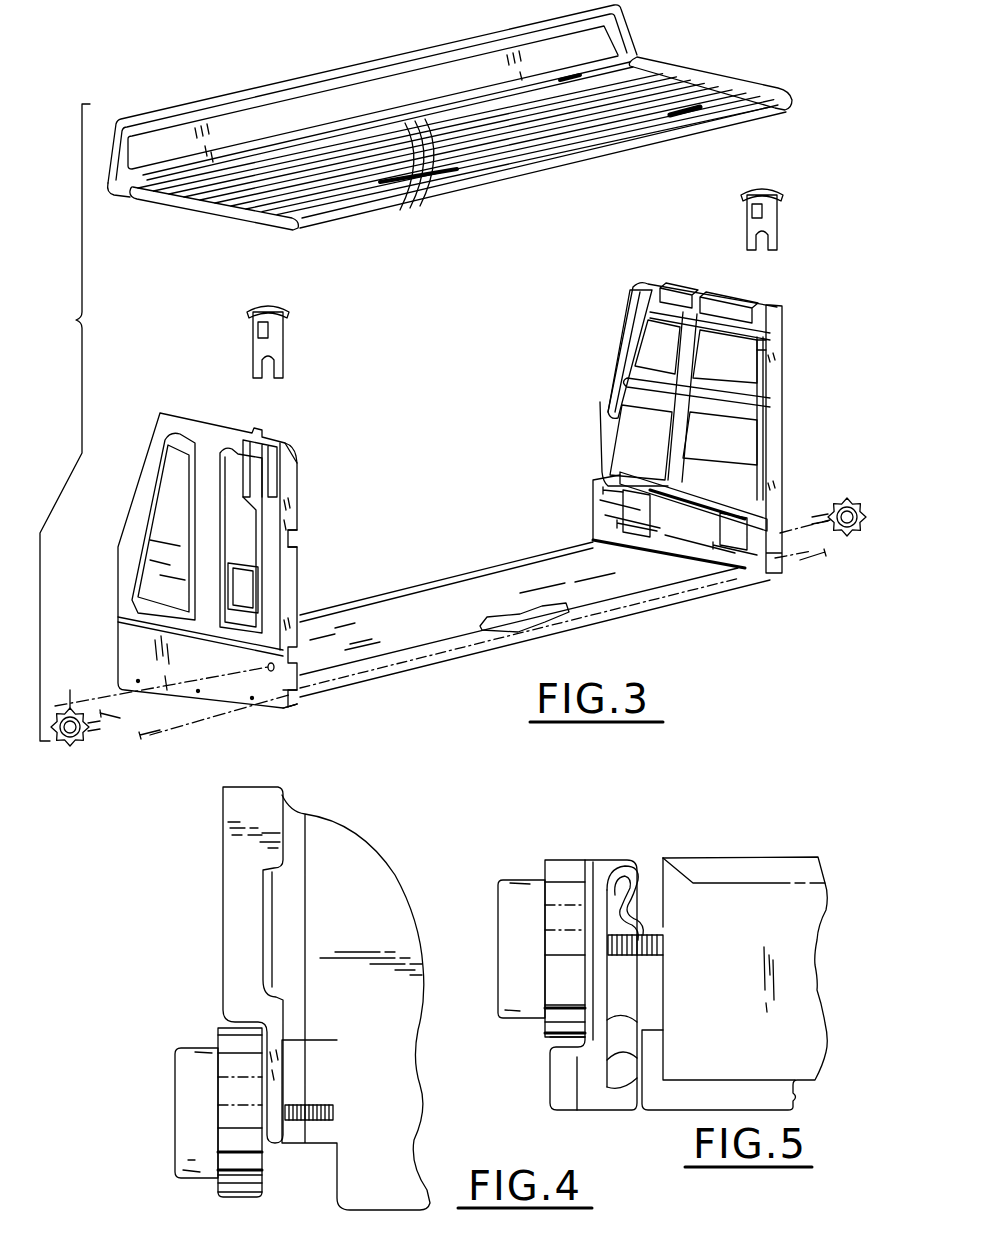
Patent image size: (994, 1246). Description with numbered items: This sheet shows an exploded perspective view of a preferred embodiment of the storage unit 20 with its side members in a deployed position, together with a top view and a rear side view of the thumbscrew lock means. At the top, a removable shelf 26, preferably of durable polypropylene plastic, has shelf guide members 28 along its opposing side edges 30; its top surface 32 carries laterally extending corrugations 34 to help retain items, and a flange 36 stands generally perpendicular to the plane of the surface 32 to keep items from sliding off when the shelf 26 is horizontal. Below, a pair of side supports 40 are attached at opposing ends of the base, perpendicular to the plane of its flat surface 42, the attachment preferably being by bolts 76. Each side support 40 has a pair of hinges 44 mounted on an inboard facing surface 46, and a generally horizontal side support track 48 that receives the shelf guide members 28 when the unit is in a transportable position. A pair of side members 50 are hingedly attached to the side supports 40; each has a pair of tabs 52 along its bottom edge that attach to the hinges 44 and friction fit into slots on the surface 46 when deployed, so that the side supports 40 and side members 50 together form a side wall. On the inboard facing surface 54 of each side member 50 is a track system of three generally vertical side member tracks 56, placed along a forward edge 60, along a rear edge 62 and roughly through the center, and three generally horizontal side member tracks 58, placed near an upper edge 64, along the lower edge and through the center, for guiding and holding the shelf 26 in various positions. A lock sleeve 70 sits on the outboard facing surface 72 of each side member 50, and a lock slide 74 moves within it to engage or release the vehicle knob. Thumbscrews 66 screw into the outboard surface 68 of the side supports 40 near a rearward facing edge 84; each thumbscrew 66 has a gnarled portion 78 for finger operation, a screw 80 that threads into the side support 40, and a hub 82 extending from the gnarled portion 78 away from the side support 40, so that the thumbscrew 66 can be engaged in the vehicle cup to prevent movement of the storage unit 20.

In FIG. 3, the storage unit 20 is at (59, 422).
In FIG. 3, the removable shelf 26 is at (469, 137).
In FIG. 5, the removable shelf 26 is at (717, 951).
In FIG. 3, the shelf guide members 28 is at (272, 228).
In FIG. 5, the shelf guide members 28 is at (625, 888).
In FIG. 3, the opposing side edges 30 is at (112, 196).
In FIG. 3, the top surface 32 is at (568, 152).
In FIG. 3, the corrugations 34 is at (425, 195).
In FIG. 3, the flange 36 is at (440, 62).
In FIG. 3, the side supports 40 is at (455, 478).
In FIG. 4, the side supports 40 is at (233, 874).
In FIG. 3, the flat surface 42 is at (640, 585).
In FIG. 3, the hinges 44 is at (615, 526).
In FIG. 3, the inboard facing surface 46 is at (700, 540).
In FIG. 3, the side support track 48 is at (600, 492).
In FIG. 3, the side members 50 is at (145, 432).
In FIG. 3, the tabs 52 is at (603, 482).
In FIG. 3, the inboard facing surface 54 is at (662, 288).
In FIG. 3, the vertically extending side member tracks 56 is at (226, 427).
In FIG. 3, the horizontally extending side member tracks 58 is at (297, 535).
In FIG. 3, the forward edge 60 is at (628, 300).
In FIG. 5, the forward edge 60 is at (528, 860).
In FIG. 3, the rear edge 62 is at (298, 510).
In FIG. 3, the upper edge 64 is at (735, 303).
In FIG. 3, the thumbscrew 66 is at (70, 748).
In FIG. 4, the thumbscrew 66 is at (204, 1031).
In FIG. 5, the thumbscrew 66 is at (565, 948).
In FIG. 3, the outboard surface 68 is at (136, 640).
In FIG. 3, the lock sleeve 70 is at (272, 468).
In FIG. 3, the outboard facing surface 72 is at (213, 515).
In FIG. 3, the lock slide 74 is at (800, 210).
In FIG. 3, the bolts 76 is at (150, 735).
In FIG. 4, the gnarled portion 78 is at (262, 1184).
In FIG. 5, the gnarled portion 78 is at (570, 1033).
In FIG. 4, the screw 80 is at (333, 1110).
In FIG. 5, the screw 80 is at (663, 948).
In FIG. 4, the hub 82 is at (185, 1092).
In FIG. 5, the hub 82 is at (530, 1012).
In FIG. 3, the rearward facing edge 84 is at (298, 698).